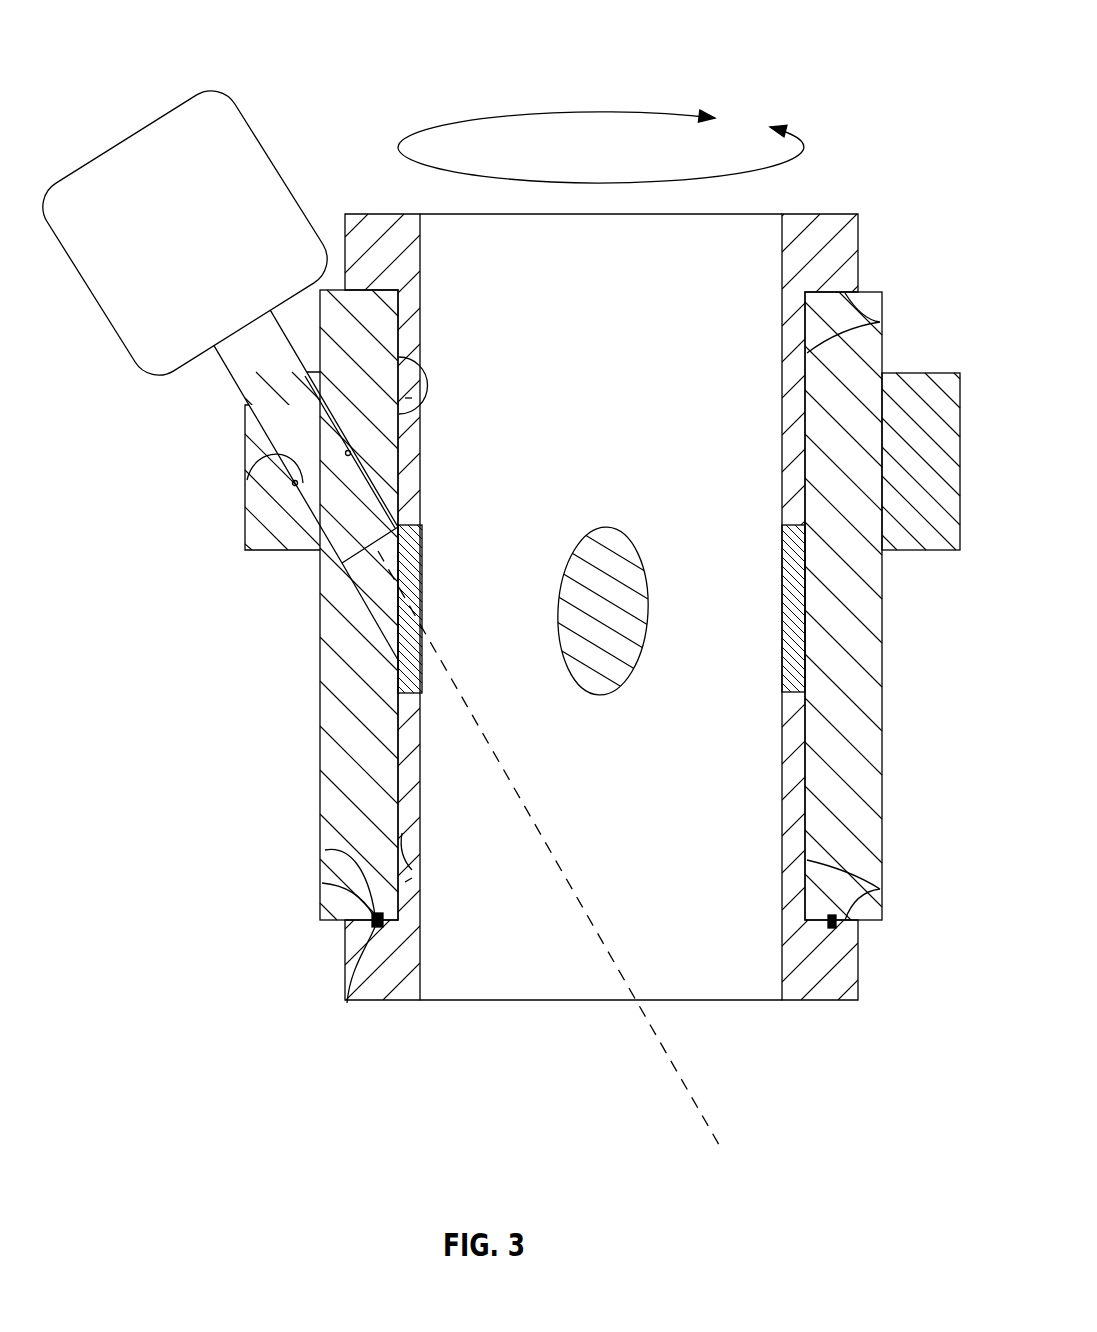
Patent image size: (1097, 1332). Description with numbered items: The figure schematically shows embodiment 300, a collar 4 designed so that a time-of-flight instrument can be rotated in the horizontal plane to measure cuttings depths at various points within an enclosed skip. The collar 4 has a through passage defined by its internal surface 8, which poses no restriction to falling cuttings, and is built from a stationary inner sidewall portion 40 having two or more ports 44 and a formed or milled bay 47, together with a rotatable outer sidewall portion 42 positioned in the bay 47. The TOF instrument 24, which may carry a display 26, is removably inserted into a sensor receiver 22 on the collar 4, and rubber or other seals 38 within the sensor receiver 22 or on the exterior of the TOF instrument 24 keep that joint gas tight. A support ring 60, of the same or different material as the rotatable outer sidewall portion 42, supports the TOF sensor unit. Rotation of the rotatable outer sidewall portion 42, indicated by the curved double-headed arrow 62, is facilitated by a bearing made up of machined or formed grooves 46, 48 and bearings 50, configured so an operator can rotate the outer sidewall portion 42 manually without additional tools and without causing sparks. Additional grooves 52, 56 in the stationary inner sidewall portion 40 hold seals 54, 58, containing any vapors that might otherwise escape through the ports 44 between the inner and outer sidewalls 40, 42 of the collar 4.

The embodiment 300 is at (496, 575).
The curved double-headed arrow 62 is at (553, 110).
The stationary inner sidewall portion 40 is at (420, 268).
The internal surface 8 is at (422, 950).
The display 26 is at (118, 342).
The TOF instrument 24 is at (237, 380).
The sensor receiver 22 is at (350, 587).
The seal 54 is at (408, 378).
The groove 52 is at (412, 398).
The seals 38 is at (247, 480).
The support ring 60 is at (246, 547).
The ports 44 is at (424, 548).
The rotatable outer sidewall portion 42 is at (335, 722).
The collar 4 is at (883, 768).
The seal 58 is at (402, 833).
The groove 56 is at (412, 878).
The groove 46 is at (325, 850).
The bearings 50 is at (322, 883).
The groove 48 is at (347, 1003).
The bay 47 is at (880, 322).